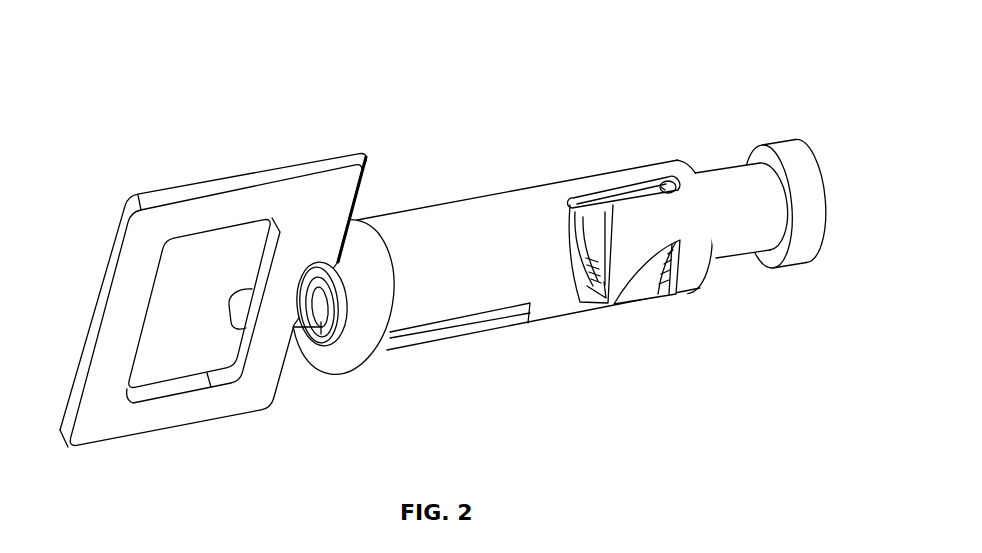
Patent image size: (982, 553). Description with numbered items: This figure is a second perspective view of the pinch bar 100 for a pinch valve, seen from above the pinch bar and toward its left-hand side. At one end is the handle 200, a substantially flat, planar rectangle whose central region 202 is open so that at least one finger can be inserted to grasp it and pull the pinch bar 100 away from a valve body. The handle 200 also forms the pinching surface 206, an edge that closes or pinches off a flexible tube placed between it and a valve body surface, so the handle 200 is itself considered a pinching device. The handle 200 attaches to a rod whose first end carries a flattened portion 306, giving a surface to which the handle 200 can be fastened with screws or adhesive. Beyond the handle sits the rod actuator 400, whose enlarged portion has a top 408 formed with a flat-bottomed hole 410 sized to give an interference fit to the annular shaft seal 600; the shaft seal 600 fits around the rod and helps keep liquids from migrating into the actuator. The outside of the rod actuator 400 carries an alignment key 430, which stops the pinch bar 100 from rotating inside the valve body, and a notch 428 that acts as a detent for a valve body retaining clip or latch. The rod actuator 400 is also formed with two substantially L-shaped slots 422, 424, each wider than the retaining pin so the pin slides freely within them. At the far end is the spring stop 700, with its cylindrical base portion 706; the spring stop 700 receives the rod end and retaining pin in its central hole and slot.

The pinch bar 100 is at (148, 77).
The handle 200 is at (313, 160).
The central region 202 is at (207, 355).
The pinching surface 206 is at (360, 185).
The flattened portion 306 is at (669, 169).
The rod actuator 400 is at (547, 300).
The top of the enlarged portion 408 is at (343, 297).
The flat-bottomed hole 410 is at (342, 321).
The L-shaped slot 422 is at (625, 193).
The L-shaped slot 424 is at (578, 203).
The notch 428 is at (650, 294).
The alignment key 430 is at (507, 322).
The shaft seal 600 is at (327, 330).
The spring stop 700 is at (740, 250).
The base portion 706 is at (803, 258).